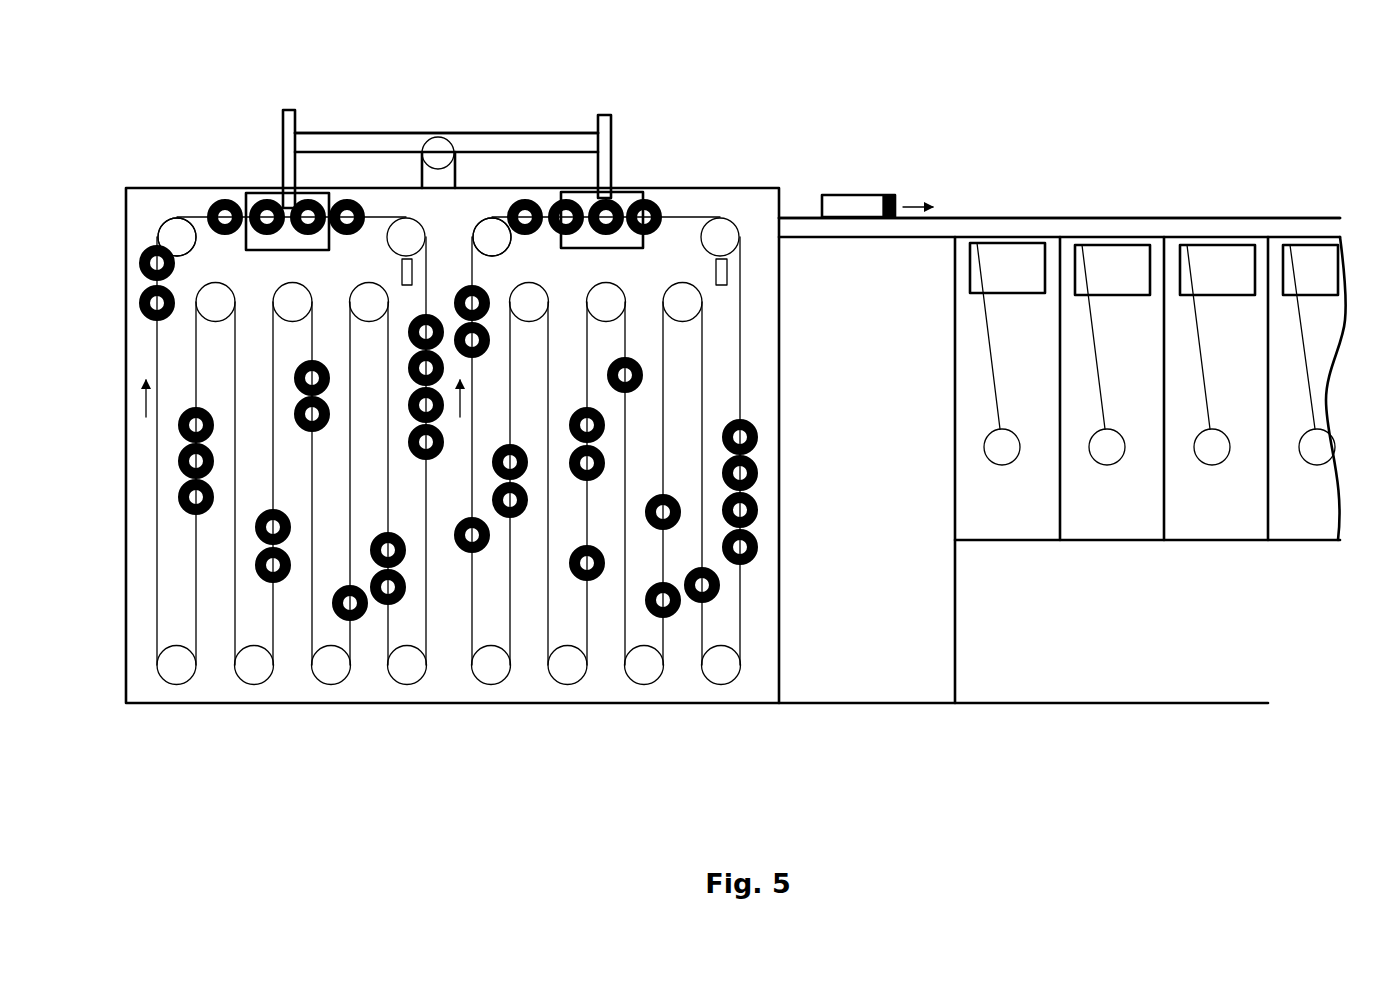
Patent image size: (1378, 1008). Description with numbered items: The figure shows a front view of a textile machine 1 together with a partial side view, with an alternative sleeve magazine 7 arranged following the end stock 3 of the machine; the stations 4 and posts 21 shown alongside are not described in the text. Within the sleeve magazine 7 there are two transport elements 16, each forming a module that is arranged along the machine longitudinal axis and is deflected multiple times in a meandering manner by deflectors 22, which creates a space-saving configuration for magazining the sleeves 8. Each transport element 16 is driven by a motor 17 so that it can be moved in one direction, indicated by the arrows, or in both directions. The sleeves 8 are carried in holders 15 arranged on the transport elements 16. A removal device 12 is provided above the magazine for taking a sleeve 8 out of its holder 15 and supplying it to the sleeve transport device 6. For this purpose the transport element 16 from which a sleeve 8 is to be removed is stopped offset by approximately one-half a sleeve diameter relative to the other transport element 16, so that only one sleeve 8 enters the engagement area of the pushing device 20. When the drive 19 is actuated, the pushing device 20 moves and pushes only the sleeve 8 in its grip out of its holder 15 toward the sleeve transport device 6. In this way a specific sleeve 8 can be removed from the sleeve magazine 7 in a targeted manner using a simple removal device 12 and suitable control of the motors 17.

The textile machine 1 is at (982, 130).
The end stock 3 is at (925, 575).
The processing station 4 is at (1208, 517).
The sleeve transport device 6 is at (1098, 225).
The sleeve magazine 7 is at (728, 165).
The sleeve 8 is at (845, 203).
The removal device 12 is at (543, 107).
The holder 15 is at (353, 617).
The transport element 16 is at (312, 645).
The motor 17 is at (400, 273).
The drive 19 is at (440, 133).
The pushing device 20 is at (562, 133).
The post 21 is at (268, 176).
The deflector 22 is at (180, 238).